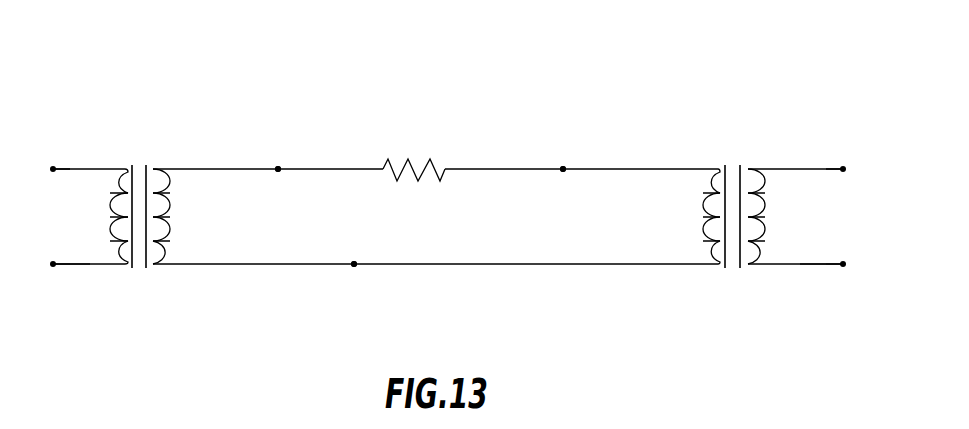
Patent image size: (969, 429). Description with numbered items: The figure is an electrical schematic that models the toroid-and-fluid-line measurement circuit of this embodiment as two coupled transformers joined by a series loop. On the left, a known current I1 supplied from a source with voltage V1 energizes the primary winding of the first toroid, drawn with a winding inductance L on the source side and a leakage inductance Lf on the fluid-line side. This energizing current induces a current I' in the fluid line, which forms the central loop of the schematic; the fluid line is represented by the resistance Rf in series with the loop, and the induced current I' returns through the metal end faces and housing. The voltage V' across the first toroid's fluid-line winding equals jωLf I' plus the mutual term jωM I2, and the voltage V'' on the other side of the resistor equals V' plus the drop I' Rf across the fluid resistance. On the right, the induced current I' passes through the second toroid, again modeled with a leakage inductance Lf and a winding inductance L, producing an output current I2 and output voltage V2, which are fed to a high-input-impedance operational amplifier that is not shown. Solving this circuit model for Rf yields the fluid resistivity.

The source voltage V1 is at (54, 201).
The output voltage V2 is at (842, 201).
The line inductance L is at (414, 234).
The fluid line inductance Lf is at (436, 234).
The fluid resistance Rf is at (414, 157).
The voltage V'' is at (281, 152).
The voltage V' is at (564, 152).
The induced current I' is at (364, 279).
The known current I1 is at (86, 252).
The output current I2 is at (802, 253).